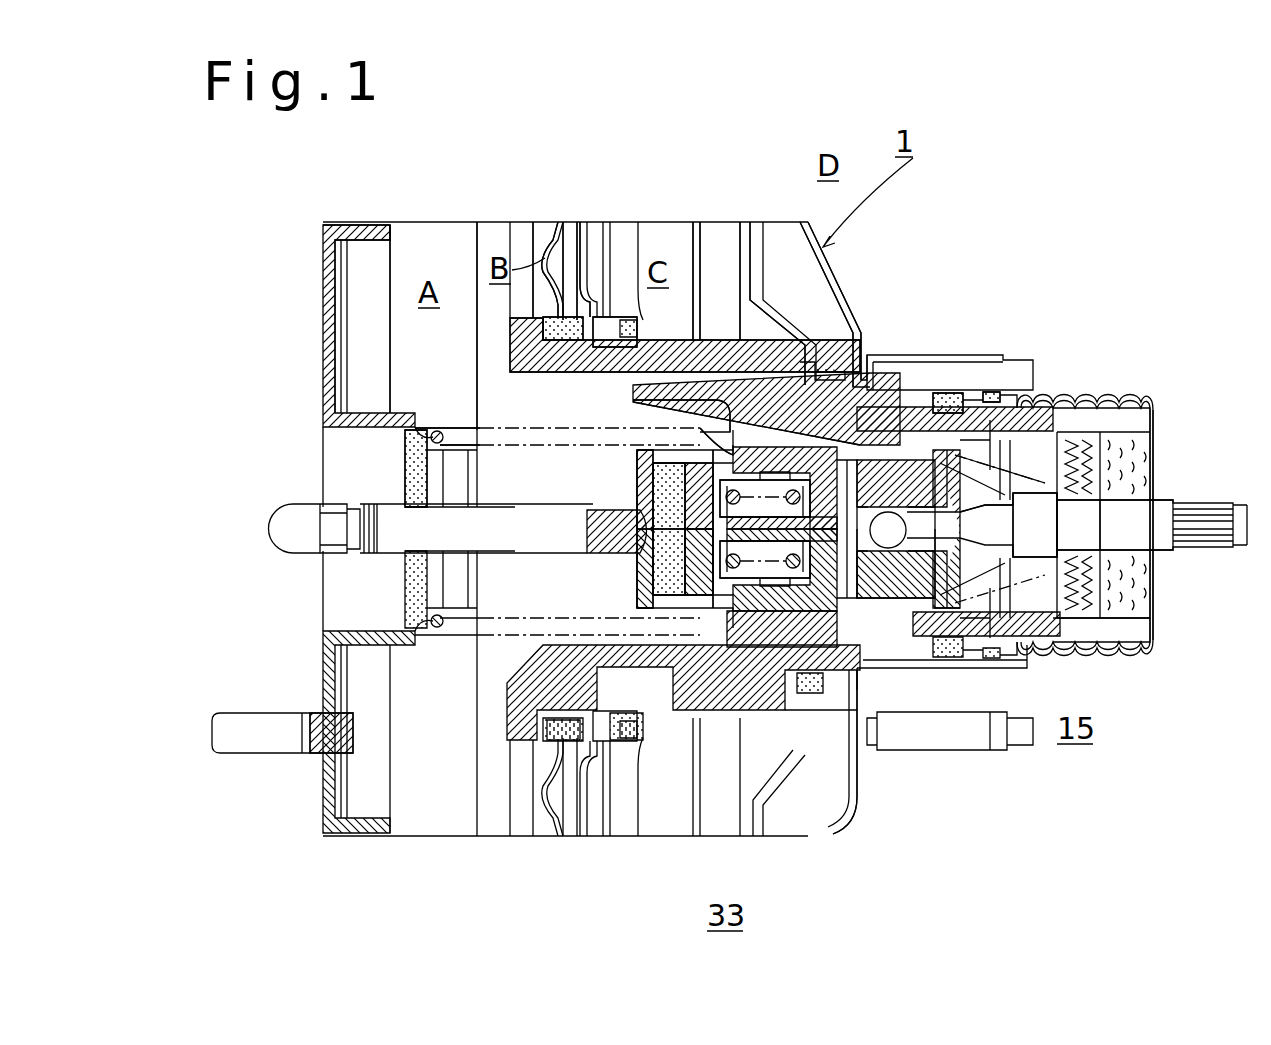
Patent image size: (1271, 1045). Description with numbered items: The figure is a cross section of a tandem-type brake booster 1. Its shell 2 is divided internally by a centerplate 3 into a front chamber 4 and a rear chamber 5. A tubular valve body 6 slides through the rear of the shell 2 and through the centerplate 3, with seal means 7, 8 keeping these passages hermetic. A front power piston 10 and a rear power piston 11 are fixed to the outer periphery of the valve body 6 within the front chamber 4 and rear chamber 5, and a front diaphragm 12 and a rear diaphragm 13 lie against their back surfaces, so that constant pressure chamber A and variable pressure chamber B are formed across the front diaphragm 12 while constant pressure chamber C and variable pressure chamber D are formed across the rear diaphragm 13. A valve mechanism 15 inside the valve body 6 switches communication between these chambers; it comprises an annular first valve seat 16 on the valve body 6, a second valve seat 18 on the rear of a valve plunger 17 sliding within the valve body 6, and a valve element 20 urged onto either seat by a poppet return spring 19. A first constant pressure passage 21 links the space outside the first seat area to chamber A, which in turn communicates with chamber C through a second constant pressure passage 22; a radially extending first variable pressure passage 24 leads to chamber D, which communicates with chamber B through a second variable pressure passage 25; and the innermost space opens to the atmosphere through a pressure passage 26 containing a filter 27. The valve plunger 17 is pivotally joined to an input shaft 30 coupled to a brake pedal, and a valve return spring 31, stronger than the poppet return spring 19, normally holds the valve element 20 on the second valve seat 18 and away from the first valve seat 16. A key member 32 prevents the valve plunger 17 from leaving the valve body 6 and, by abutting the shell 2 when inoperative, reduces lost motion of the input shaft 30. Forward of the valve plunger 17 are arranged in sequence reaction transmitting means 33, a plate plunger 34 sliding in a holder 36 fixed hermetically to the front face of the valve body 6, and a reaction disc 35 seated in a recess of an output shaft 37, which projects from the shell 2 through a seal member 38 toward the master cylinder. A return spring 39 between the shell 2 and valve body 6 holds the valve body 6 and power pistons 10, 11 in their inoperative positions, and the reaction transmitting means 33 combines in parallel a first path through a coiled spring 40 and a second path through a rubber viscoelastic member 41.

The brake booster 1 is at (803, 262).
The shell 2 is at (323, 242).
The centerplate 3 is at (593, 227).
The front chamber 4 is at (437, 227).
The rear chamber 5 is at (668, 235).
The valve body 6 is at (512, 705).
The seal means 7 is at (955, 395).
The seal means 8 is at (606, 232).
The front power piston 10 is at (533, 227).
The rear power piston 11 is at (740, 232).
The front diaphragm 12 is at (577, 227).
The rear diaphragm 13 is at (758, 235).
The valve mechanism 15 is at (1013, 667).
The first valve seat 16 is at (925, 455).
The valve plunger 17 is at (887, 580).
The second valve seat 18 is at (920, 447).
The poppet return spring 19 is at (1005, 430).
The valve element 20 is at (967, 433).
The first constant pressure passage 21 is at (655, 414).
The second constant pressure passage 22 is at (717, 370).
The first variable pressure passage 24 is at (913, 590).
The second variable pressure passage 25 is at (708, 560).
The pressure passage 26 is at (1078, 645).
The filter 27 is at (1150, 640).
The input shaft 30 is at (1195, 545).
The valve return spring 31 is at (1030, 412).
The key member 32 is at (853, 773).
The reaction transmitting means 33 is at (740, 600).
The plate plunger 34 is at (657, 492).
The reaction disc 35 is at (660, 573).
The holder 36 is at (727, 457).
The output shaft 37 is at (285, 538).
The seal member 38 is at (410, 487).
The return spring 39 is at (497, 425).
The coiled spring 40 is at (785, 600).
The viscoelastic member 41 is at (710, 605).